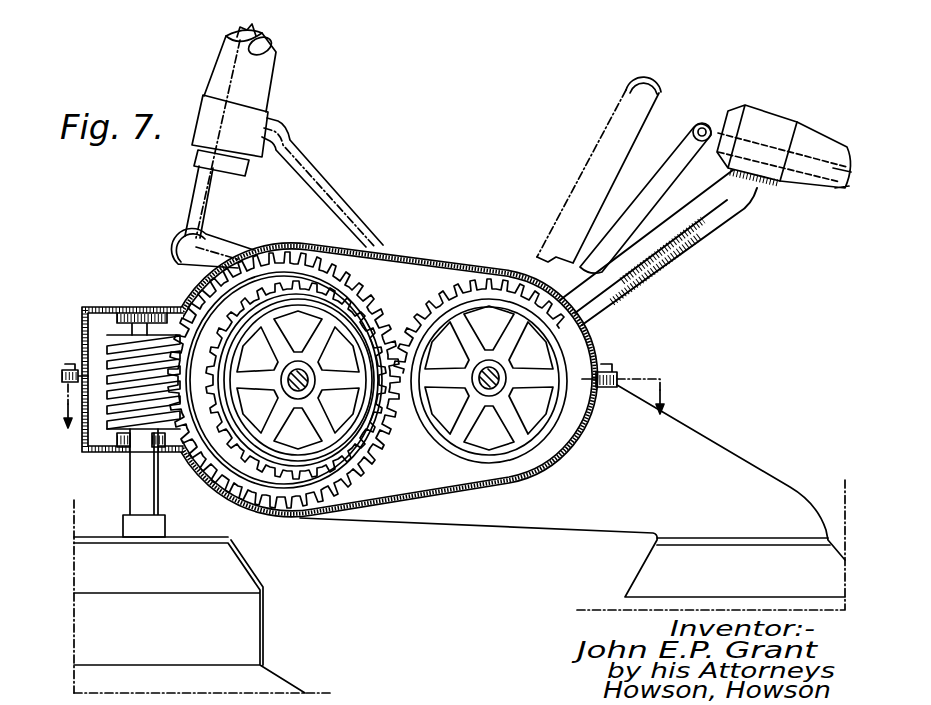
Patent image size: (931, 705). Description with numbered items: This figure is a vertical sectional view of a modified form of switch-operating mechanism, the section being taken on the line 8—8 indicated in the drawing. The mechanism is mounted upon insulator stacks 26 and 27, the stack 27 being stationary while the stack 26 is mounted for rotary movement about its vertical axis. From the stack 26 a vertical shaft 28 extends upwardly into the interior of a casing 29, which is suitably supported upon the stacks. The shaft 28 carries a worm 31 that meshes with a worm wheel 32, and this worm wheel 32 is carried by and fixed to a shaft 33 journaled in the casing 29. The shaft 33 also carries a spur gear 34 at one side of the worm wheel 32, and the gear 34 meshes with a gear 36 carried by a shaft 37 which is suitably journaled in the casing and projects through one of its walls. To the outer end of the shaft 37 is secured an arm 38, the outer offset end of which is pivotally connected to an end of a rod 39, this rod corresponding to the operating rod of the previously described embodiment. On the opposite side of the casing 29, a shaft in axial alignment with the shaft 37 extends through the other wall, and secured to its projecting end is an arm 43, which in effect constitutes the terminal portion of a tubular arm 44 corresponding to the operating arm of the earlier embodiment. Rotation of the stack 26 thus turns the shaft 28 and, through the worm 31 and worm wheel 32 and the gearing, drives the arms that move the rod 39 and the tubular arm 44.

The section line 8-8 / bolt 8 is at (369, 411).
The insulator stack 26 is at (255, 619).
The insulator stack 27 is at (640, 574).
The vertical shaft 28 is at (138, 498).
The casing 29 is at (88, 293).
The worm 31 is at (166, 326).
The worm wheel 32 is at (378, 285).
The shaft 33 is at (310, 382).
The spur gear 34 is at (405, 318).
The gear 36 is at (486, 290).
The shaft 37 is at (500, 380).
The arm 38 is at (230, 250).
The rod 39 is at (193, 199).
The arm 43 is at (318, 145).
The tubular arm 44 is at (253, 77).